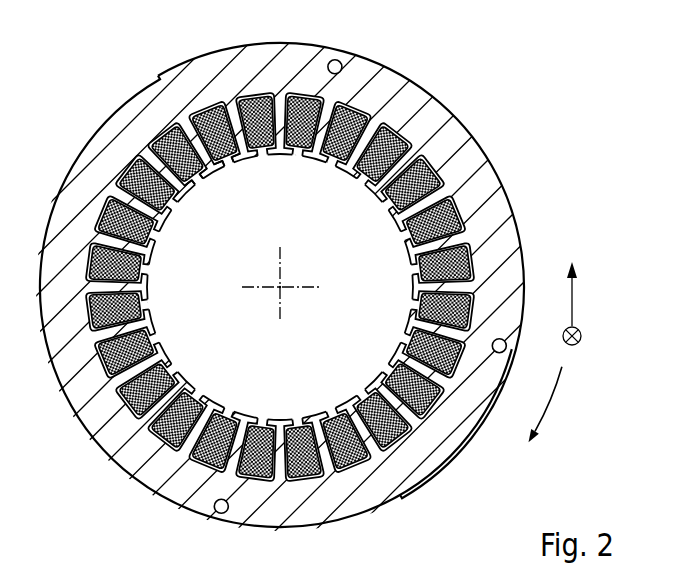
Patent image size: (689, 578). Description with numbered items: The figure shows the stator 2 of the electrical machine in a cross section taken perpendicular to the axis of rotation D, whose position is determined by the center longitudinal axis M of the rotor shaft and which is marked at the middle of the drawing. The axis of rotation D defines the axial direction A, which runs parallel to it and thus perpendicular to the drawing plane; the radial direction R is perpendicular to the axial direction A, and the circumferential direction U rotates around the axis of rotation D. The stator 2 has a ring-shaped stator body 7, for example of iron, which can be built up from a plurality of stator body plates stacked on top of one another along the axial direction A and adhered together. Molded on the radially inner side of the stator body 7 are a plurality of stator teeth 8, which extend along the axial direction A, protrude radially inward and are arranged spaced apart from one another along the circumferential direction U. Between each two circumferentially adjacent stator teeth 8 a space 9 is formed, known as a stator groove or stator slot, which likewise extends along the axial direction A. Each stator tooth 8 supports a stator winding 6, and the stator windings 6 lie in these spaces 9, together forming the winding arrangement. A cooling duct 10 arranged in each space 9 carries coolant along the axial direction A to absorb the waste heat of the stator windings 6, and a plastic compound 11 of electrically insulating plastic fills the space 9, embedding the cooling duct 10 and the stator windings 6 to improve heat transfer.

The stator 2 is at (344, 289).
The stator winding 6 is at (152, 140).
The stator body 7 is at (422, 102).
The stator tooth 8 is at (185, 203).
The space 9 is at (200, 185).
The cooling duct 10 is at (167, 133).
The plastic compound 11 is at (247, 207).
The center longitudinal axis M is at (283, 290).
The axis of rotation D is at (324, 325).
The radial direction R is at (576, 301).
The axial direction A is at (582, 338).
The circumferential direction U is at (551, 397).